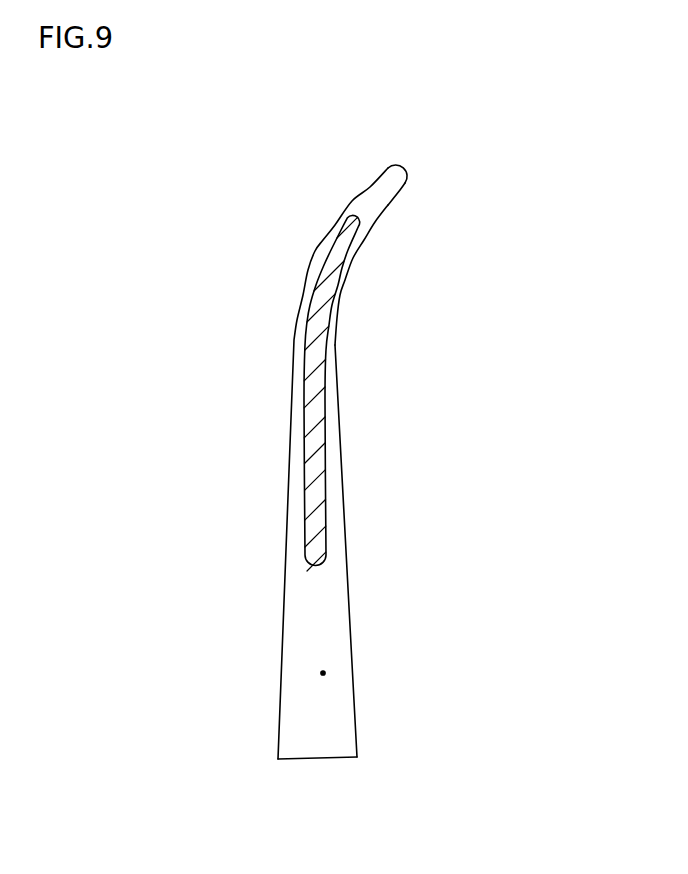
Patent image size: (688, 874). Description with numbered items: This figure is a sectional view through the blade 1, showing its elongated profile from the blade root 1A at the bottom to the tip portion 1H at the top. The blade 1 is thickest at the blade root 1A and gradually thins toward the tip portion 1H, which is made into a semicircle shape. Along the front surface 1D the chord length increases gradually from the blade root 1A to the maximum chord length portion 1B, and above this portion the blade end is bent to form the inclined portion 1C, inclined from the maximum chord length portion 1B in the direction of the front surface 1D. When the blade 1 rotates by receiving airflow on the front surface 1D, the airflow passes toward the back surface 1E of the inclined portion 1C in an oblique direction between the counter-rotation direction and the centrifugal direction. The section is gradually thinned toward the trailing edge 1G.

The blade 1 is at (256, 350).
The blade root 1A is at (357, 757).
The maximum chord length portion 1B is at (339, 292).
The inclined portion 1C is at (400, 190).
The front surface 1D is at (350, 612).
The back surface 1E is at (282, 647).
The trailing edge 1G is at (323, 673).
The tip portion 1H is at (403, 170).